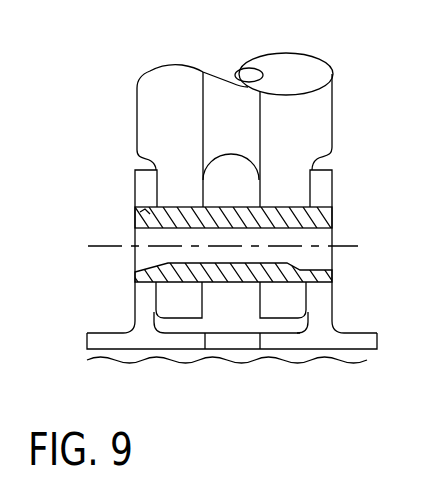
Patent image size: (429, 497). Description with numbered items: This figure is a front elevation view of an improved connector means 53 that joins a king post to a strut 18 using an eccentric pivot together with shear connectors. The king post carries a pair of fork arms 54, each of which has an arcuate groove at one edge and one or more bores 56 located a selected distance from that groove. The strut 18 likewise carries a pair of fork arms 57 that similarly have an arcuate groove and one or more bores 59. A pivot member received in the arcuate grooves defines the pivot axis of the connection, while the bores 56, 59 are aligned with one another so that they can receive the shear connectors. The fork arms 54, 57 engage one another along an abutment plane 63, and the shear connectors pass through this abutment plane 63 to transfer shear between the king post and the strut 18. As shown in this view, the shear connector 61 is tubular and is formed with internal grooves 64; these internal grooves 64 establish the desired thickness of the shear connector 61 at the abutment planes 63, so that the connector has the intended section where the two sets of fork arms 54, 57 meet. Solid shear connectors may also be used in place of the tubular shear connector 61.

The strut 18 is at (350, 358).
The connector means 53 is at (400, 218).
The fork arms 54 is at (150, 161).
The bores 56 is at (167, 212).
The fork arms 57 is at (137, 300).
The bores 59 is at (140, 214).
The shear connector 61 is at (138, 272).
The abutment plane 63 is at (155, 300).
The internal grooves 64 is at (161, 217).